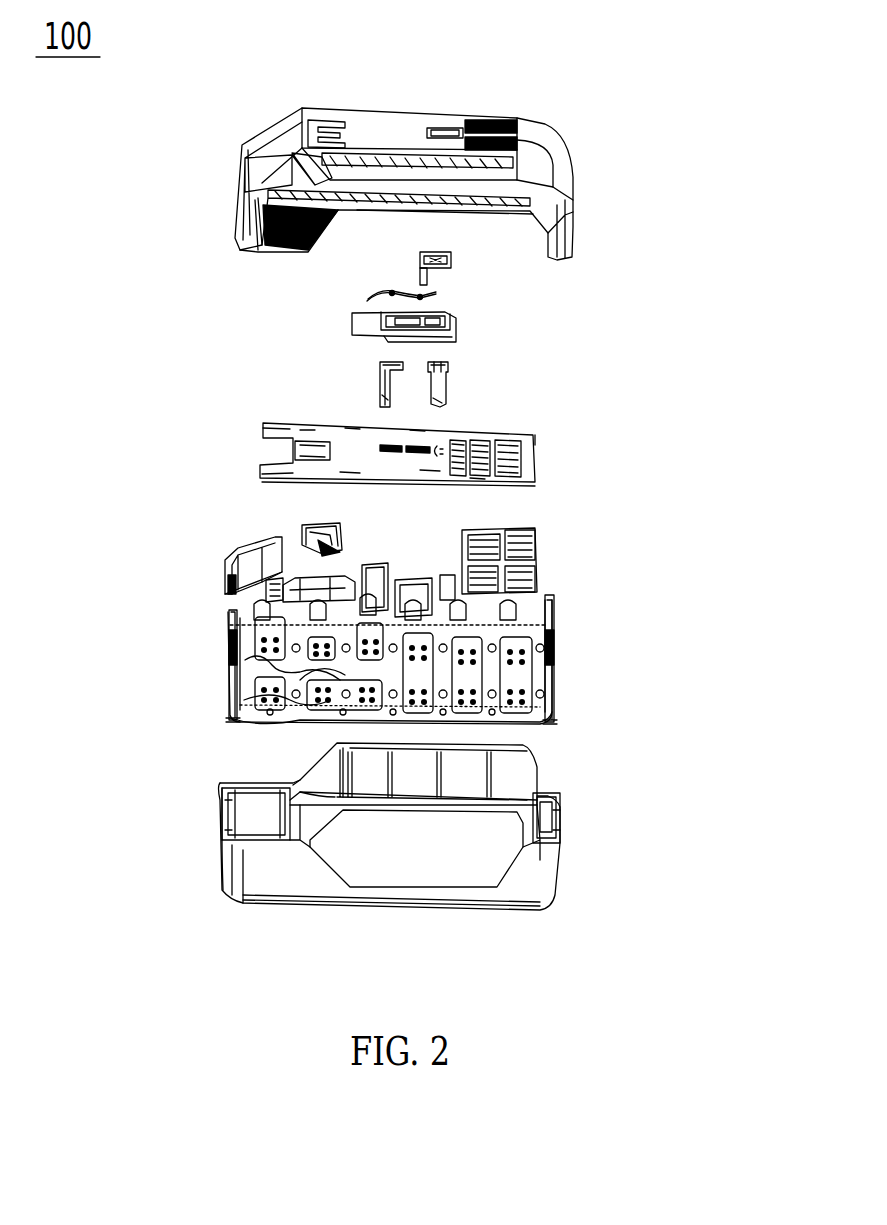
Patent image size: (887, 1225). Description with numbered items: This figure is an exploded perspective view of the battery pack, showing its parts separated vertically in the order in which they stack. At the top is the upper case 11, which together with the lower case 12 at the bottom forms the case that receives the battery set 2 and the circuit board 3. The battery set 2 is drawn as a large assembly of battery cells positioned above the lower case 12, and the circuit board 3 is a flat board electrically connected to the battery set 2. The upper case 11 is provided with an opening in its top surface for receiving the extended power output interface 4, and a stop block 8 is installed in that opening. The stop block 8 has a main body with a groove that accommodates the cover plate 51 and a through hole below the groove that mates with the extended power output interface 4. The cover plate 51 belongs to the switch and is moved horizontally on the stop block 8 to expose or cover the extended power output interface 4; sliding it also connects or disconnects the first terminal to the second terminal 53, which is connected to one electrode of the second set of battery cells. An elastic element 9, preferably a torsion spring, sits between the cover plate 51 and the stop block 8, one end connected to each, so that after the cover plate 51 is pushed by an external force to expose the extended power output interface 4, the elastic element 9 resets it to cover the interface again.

The upper case 11 is at (540, 170).
The cover plate 51 is at (452, 266).
The elastic element 9 is at (373, 298).
The stop block 8 is at (457, 322).
The second terminal 53 is at (378, 378).
The extended power output interface 4 is at (450, 381).
The circuit board 3 is at (520, 448).
The battery set 2 is at (553, 664).
The lower case 12 is at (535, 872).